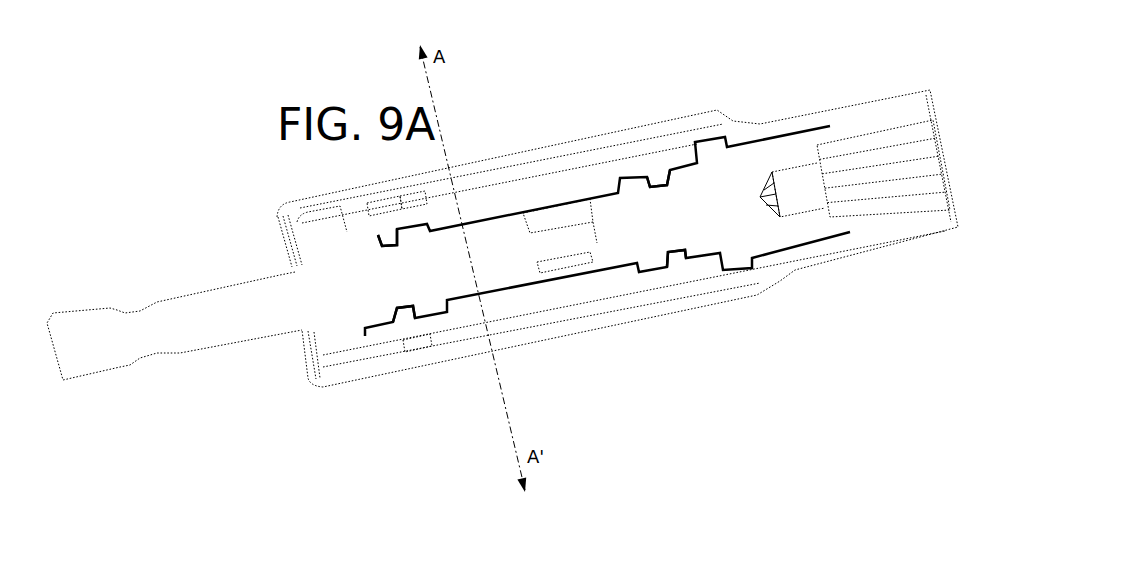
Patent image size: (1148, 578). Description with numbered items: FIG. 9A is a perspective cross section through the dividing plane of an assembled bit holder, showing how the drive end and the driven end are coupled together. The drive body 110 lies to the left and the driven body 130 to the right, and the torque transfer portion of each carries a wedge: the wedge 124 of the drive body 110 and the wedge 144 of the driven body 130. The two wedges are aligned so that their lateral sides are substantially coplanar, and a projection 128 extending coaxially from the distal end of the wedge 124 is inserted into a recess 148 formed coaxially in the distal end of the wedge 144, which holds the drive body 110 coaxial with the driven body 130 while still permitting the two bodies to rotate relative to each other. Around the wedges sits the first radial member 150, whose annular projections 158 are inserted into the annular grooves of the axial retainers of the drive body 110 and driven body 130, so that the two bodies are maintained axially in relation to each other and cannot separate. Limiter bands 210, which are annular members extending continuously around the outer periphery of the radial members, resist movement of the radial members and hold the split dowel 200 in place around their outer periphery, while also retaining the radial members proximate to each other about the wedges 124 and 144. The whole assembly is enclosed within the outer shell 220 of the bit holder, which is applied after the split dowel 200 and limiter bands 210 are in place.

The drive body 110 is at (293, 305).
The wedge 124 is at (488, 244).
The projection 128 is at (570, 247).
The driven body 130 is at (740, 228).
The wedge 144 is at (576, 208).
The recess 148 is at (598, 252).
The first radial member 150 is at (452, 215).
The annular projections 158 is at (660, 177).
The split dowel 200 is at (497, 322).
The limiter bands 210 is at (383, 200).
The shell 220 is at (717, 110).